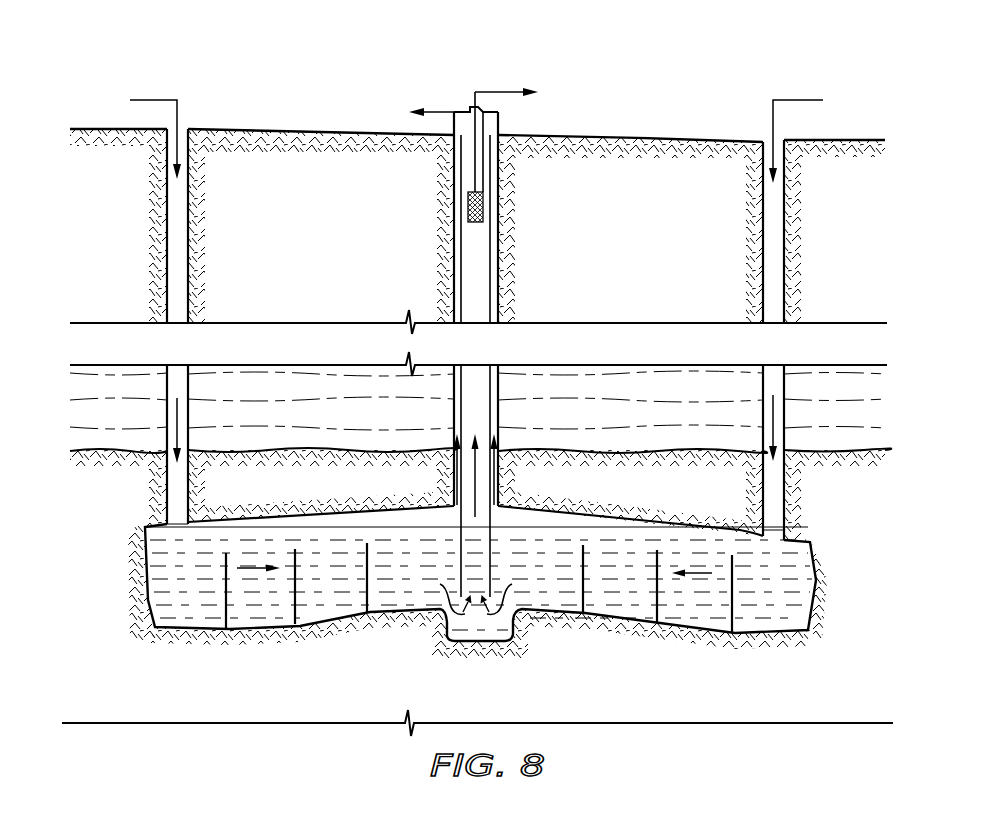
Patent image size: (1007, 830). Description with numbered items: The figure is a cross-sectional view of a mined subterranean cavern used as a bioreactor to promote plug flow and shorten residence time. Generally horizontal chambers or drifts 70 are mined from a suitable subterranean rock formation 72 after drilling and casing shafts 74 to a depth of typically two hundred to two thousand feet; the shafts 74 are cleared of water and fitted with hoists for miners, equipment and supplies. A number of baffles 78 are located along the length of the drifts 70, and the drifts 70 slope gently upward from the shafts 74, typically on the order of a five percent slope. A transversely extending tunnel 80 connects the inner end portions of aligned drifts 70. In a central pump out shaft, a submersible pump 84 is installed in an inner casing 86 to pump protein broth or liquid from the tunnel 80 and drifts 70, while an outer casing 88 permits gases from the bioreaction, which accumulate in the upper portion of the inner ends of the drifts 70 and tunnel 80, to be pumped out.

The generally horizontal chambers or drifts 70 is at (318, 604).
The subterranean rock formation 72 is at (326, 494).
The shafts 74 is at (185, 262).
The baffles 78 is at (226, 600).
The transversely extending tunnel 80 is at (510, 517).
The submersible pump 84 is at (483, 207).
The inner casing 86 is at (490, 176).
The outer casing 88 is at (496, 122).